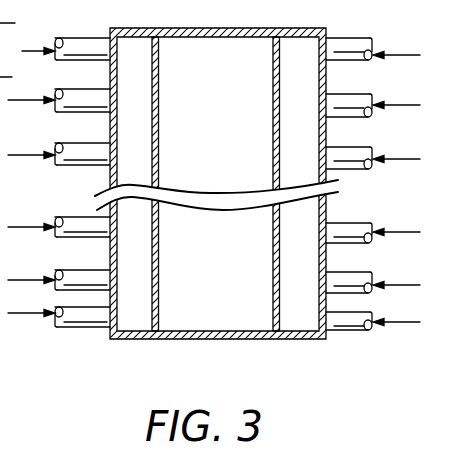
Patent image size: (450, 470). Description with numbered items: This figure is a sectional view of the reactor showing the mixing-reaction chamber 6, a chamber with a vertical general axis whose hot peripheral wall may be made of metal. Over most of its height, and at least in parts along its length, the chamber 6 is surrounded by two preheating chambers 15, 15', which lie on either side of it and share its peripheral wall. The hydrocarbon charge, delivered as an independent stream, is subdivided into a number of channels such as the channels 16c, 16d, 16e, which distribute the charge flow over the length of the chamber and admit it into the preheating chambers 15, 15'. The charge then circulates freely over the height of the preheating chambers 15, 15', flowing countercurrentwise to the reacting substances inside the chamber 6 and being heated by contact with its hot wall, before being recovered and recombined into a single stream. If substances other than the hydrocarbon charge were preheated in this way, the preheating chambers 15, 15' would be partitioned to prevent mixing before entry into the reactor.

The mixing-reaction chamber 6 is at (215, 318).
The preheating chamber 15 is at (300, 211).
The preheating chamber 15' is at (140, 211).
The channel 16c is at (358, 328).
The channel 16d is at (72, 315).
The channel 16e is at (358, 47).